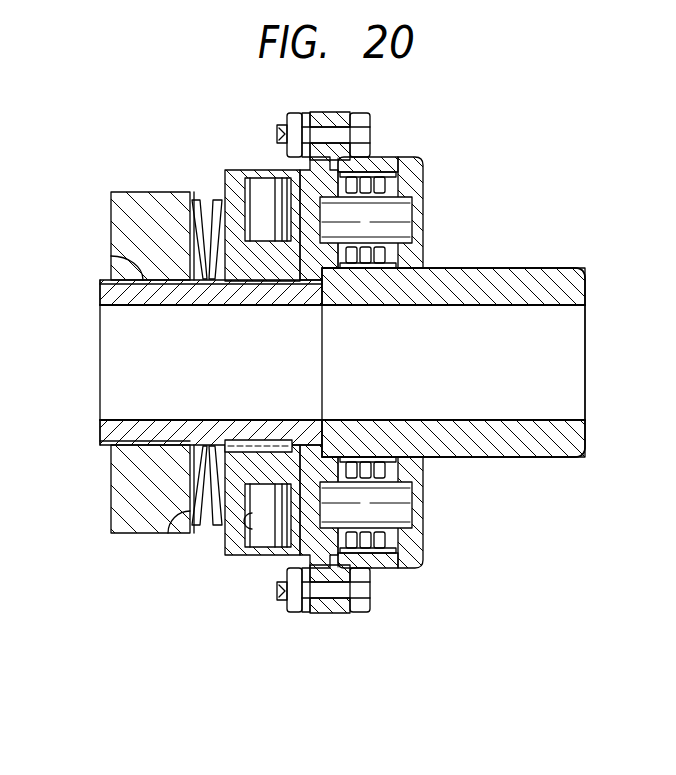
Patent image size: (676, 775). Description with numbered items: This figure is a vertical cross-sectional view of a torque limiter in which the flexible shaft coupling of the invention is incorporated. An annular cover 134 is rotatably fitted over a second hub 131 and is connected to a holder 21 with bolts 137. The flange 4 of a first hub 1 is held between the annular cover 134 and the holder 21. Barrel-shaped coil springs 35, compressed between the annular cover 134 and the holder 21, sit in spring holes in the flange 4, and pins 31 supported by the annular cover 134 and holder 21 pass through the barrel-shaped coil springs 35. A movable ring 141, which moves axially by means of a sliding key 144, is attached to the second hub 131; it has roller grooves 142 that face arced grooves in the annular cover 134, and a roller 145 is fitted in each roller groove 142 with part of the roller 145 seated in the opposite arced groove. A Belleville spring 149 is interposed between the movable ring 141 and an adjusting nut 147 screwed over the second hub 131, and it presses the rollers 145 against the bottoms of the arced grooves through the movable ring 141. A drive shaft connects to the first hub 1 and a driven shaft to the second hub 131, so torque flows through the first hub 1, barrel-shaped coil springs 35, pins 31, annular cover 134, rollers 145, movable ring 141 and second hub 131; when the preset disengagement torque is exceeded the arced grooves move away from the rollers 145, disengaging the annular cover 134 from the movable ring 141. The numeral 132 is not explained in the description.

The first hub 1 is at (540, 277).
The flange 4 is at (383, 164).
The holder 21 is at (418, 166).
The pin 31 is at (403, 215).
The barrel-shaped coil spring 35 is at (390, 180).
The second hub 131 is at (100, 300).
The ring 132 is at (111, 258).
The annular cover 134 is at (292, 168).
The bolt 137 is at (370, 134).
The movable ring 141 is at (225, 188).
The roller groove 142 is at (243, 533).
The sliding key 144 is at (258, 440).
The roller 145 is at (263, 547).
The adjusting nut 147 is at (133, 197).
The Belleville spring 149 is at (173, 537).